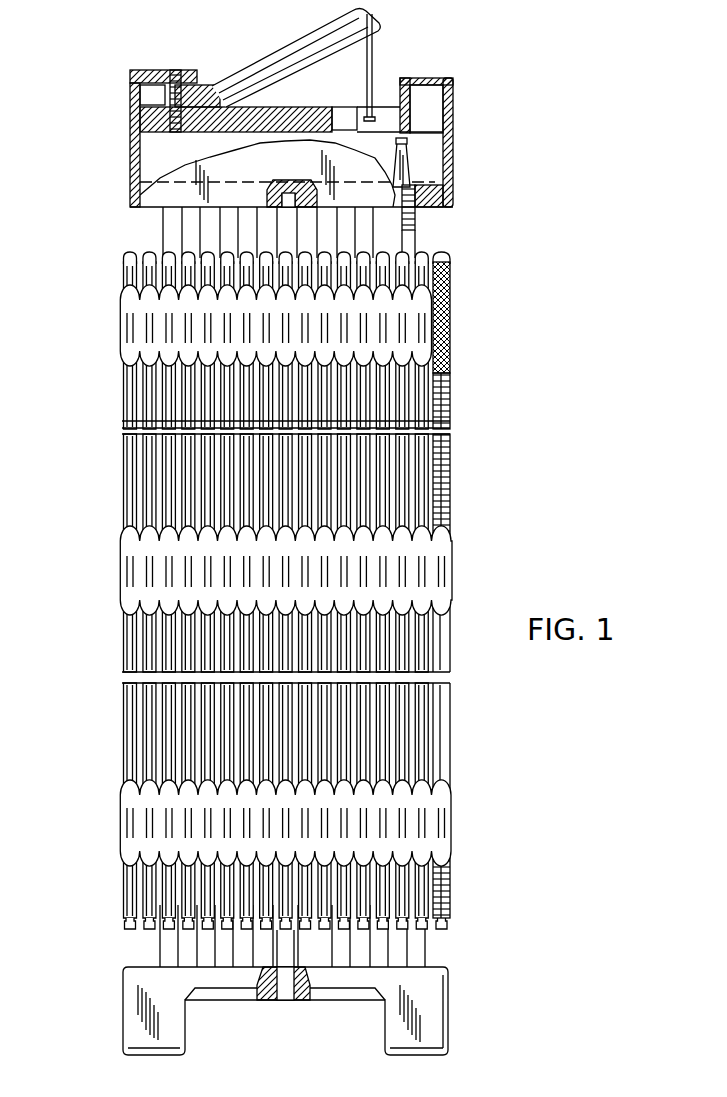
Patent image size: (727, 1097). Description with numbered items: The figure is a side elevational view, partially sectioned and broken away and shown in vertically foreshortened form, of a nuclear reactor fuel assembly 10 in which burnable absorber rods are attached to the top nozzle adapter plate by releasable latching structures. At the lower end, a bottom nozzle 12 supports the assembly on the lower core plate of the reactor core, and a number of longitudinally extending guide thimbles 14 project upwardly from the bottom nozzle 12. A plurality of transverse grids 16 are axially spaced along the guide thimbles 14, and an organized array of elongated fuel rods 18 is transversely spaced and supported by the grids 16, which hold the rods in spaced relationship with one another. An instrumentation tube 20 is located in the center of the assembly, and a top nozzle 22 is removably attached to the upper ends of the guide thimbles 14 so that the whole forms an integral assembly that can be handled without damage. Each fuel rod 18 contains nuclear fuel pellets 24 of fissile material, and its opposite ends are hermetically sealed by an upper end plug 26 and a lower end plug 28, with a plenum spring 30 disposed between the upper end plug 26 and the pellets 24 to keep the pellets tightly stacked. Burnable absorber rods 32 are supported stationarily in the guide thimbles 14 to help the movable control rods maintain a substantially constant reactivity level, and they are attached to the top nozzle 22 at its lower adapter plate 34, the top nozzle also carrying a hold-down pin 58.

The fuel assembly 10 is at (546, 195).
The bottom nozzle 12 is at (450, 1020).
The guide thimbles 14 is at (160, 225).
The transverse grids 16 is at (122, 319).
The fuel rods 18 is at (125, 404).
The instrumentation tube 20 is at (292, 978).
The top nozzle 22 is at (455, 112).
The nuclear fuel pellets 24 is at (440, 443).
The upper end plug 26 is at (128, 254).
The lower end plug 28 is at (125, 925).
The plenum spring 30 is at (450, 333).
The burnable absorber rods 32 is at (455, 193).
The adapter plate 34 is at (430, 182).
The hold-down pin 58 is at (415, 156).